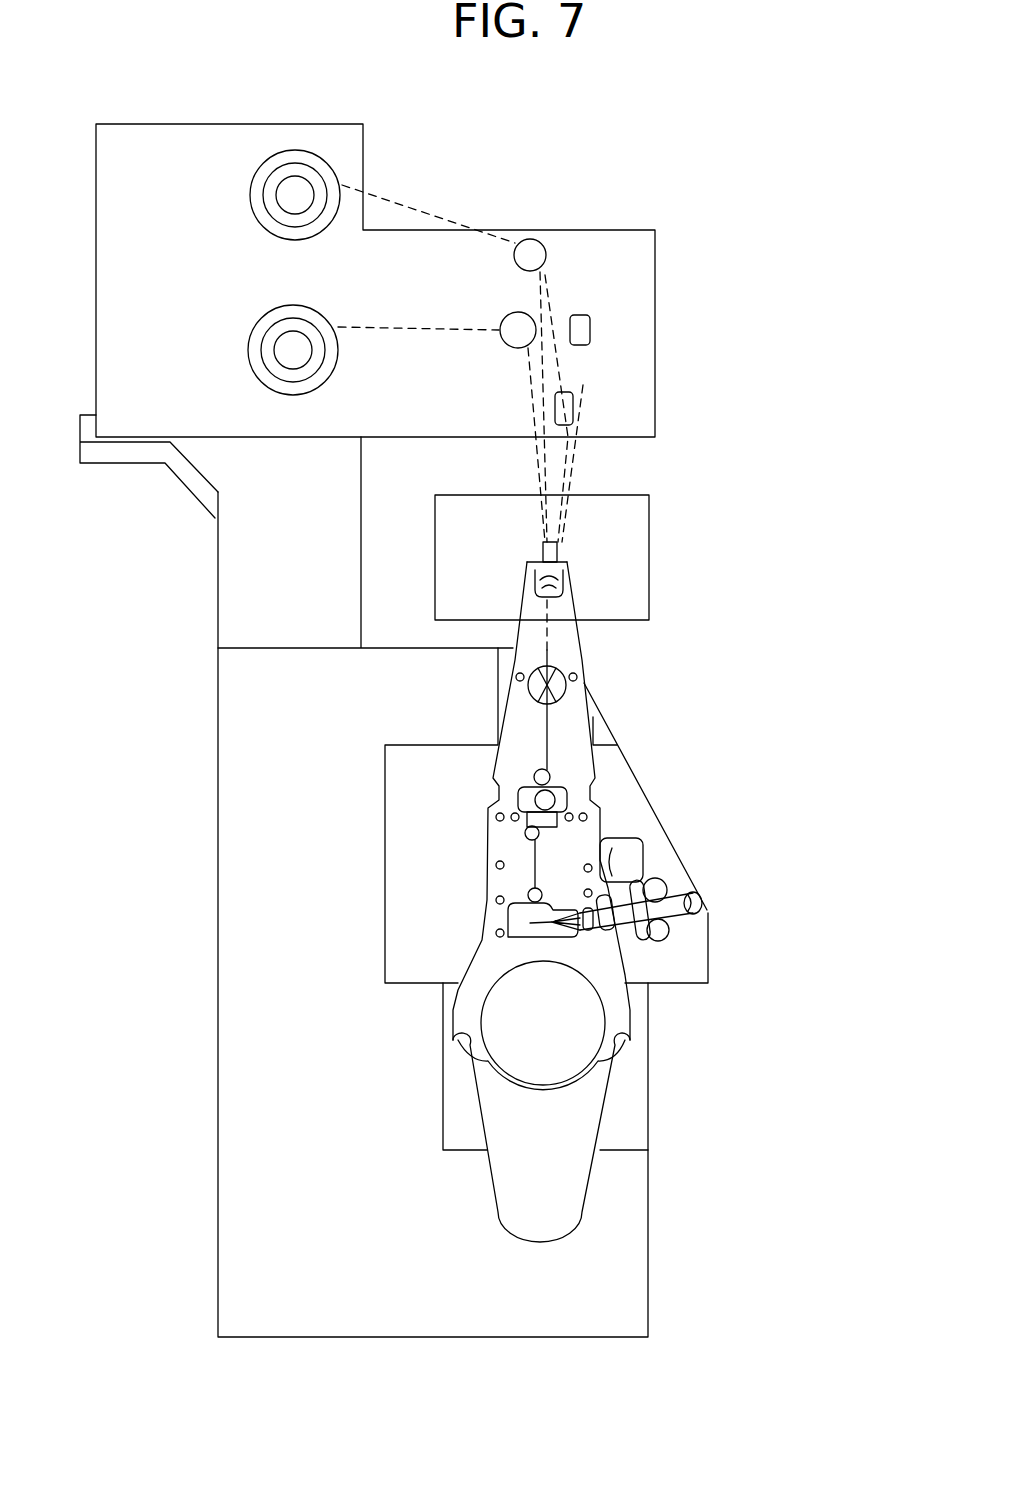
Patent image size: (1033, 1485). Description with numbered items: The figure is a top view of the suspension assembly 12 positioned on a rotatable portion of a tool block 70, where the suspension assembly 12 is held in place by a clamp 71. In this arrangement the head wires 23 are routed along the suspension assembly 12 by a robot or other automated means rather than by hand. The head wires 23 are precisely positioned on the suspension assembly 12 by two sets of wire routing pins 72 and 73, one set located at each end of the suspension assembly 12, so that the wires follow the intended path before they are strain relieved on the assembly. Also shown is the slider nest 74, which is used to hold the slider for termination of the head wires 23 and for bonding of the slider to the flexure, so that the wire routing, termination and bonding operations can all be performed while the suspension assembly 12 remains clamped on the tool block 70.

The tool block 70 is at (268, 695).
The clamp 71 is at (558, 1188).
The wire routing pins 72 is at (546, 250).
The wire routing pins 73 is at (658, 888).
The slider nest 74 is at (627, 540).
The suspension assembly 12 is at (578, 735).
The head wires 23 is at (583, 385).